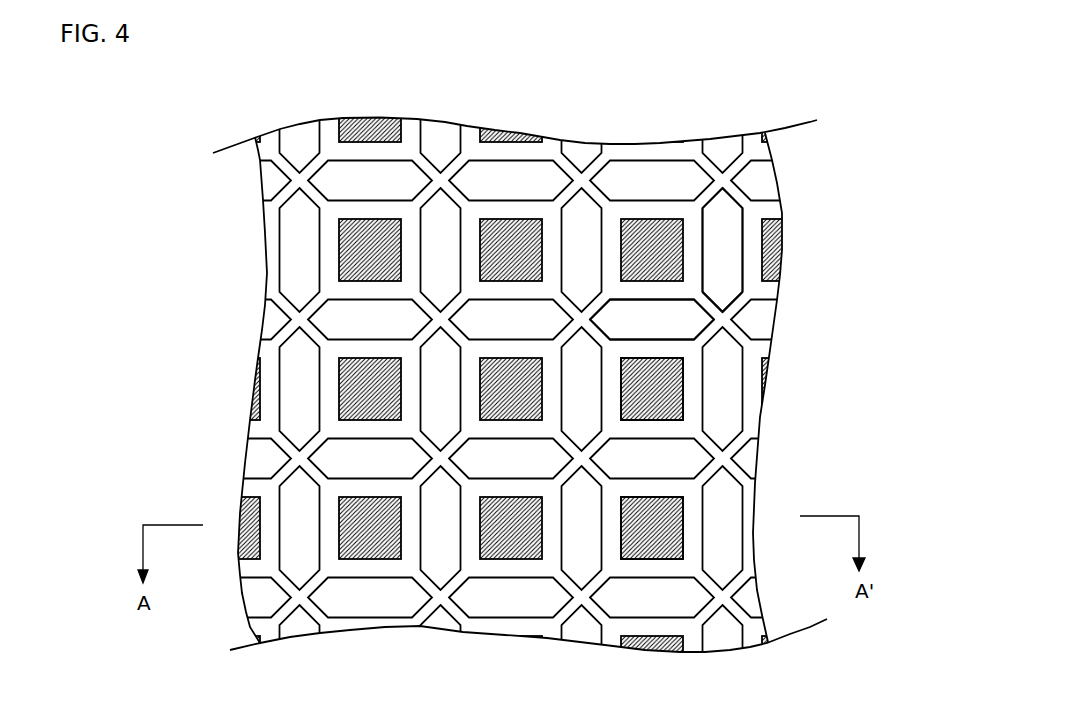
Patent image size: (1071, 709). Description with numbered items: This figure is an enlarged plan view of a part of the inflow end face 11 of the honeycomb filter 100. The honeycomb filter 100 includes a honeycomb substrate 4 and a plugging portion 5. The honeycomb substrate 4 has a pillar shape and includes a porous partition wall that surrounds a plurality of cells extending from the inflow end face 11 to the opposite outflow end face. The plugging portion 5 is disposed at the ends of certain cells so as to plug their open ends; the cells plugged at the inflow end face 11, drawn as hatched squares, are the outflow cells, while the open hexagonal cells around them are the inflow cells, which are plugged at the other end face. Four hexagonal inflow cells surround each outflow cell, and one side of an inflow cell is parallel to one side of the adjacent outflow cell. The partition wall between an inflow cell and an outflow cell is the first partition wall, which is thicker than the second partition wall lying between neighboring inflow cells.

The honeycomb filter 100 is at (860, 61).
The inflow end face 11 is at (413, 115).
The honeycomb substrate 4 is at (803, 155).
The plugging portion 5 is at (665, 527).